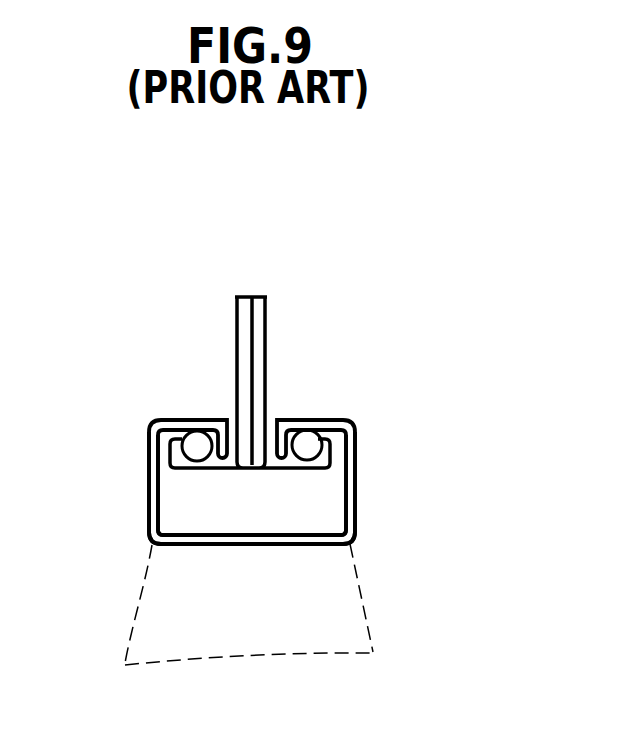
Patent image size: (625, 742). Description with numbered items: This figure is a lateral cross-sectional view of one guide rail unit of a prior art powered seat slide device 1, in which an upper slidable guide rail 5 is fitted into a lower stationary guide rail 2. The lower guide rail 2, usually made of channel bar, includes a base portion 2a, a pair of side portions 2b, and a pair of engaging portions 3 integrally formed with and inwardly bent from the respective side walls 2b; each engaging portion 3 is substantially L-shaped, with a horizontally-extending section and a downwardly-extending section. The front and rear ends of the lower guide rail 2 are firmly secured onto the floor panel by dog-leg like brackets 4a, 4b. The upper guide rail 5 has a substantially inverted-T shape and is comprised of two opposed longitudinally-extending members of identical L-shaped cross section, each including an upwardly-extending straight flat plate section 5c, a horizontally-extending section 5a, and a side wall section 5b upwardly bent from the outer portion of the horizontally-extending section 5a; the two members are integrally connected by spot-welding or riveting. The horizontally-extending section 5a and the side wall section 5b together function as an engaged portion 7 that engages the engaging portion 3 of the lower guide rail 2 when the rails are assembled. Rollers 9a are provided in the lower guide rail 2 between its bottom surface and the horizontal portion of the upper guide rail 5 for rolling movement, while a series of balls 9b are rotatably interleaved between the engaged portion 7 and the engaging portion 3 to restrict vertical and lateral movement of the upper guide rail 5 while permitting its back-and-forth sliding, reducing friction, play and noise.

The powered seat slide device 1 is at (36, 326).
The lower stationary guide rail 2 is at (246, 566).
The base portion 2a is at (235, 538).
The side portions 2b is at (147, 445).
The engaging portion 3 is at (196, 443).
The dog-leg like bracket 4a is at (316, 604).
The dog-leg like bracket 4b is at (328, 587).
The upper slidable guide rail 5 is at (266, 423).
The horizontally-extending section 5a is at (205, 467).
The side wall section 5b is at (173, 458).
The upwardly-extending straight flat plate section 5c is at (237, 318).
The engaged portion 7 is at (266, 475).
The rollers 9a is at (305, 510).
The balls 9b is at (183, 436).